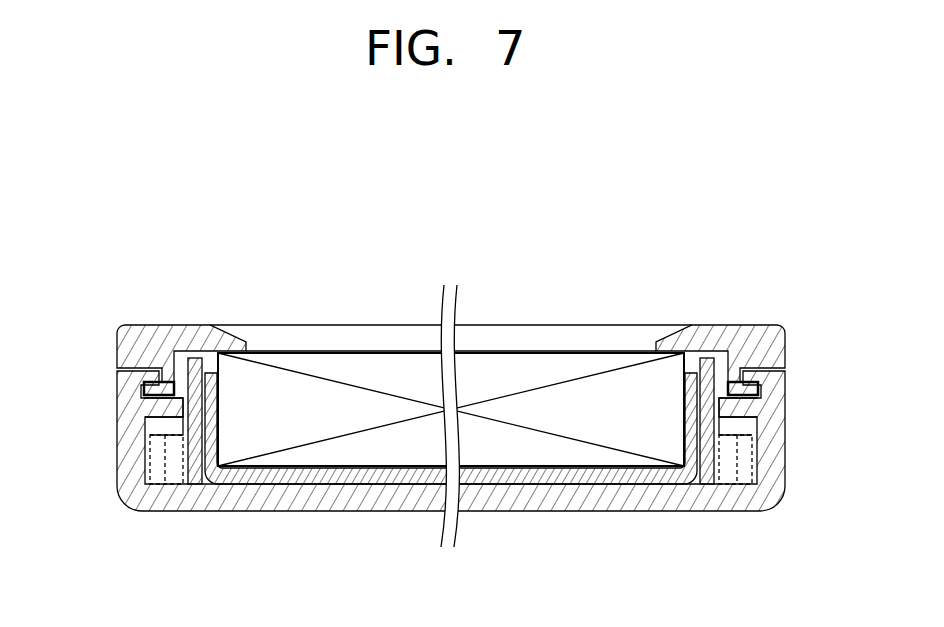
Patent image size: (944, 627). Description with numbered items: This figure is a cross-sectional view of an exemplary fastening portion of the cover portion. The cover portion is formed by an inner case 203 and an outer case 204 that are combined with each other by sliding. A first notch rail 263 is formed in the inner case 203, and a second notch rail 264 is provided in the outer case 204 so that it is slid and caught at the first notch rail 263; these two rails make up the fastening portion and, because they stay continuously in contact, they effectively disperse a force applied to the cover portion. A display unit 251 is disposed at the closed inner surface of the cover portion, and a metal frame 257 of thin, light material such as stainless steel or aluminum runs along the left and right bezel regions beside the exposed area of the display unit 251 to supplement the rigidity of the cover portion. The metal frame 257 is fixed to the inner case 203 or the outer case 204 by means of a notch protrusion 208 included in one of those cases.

The inner case 203 is at (165, 327).
The outer case 204 is at (363, 500).
The display unit 251 is at (330, 395).
The metal frame 257 is at (195, 470).
The first notch rail 263 is at (150, 389).
The second notch rail 264 is at (160, 405).
The notch protrusion 208 is at (165, 428).